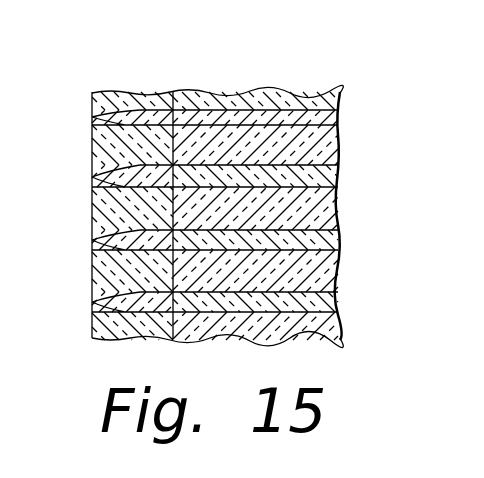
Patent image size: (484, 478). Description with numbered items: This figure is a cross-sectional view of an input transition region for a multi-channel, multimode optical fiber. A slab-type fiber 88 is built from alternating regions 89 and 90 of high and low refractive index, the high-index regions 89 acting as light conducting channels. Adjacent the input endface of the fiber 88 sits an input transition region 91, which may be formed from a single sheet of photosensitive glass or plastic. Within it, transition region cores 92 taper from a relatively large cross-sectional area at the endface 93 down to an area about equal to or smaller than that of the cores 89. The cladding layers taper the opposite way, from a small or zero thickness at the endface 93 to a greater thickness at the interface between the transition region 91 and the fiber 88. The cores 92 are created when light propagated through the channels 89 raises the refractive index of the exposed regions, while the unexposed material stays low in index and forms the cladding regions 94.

The slab-type fiber 88 is at (346, 135).
The high refractive index regions 89 is at (338, 197).
The low refractive index regions 90 is at (338, 298).
The input transition region 91 is at (134, 86).
The transition region cores 92 is at (92, 190).
The endface 93 is at (92, 318).
The cladding regions 94 is at (184, 216).